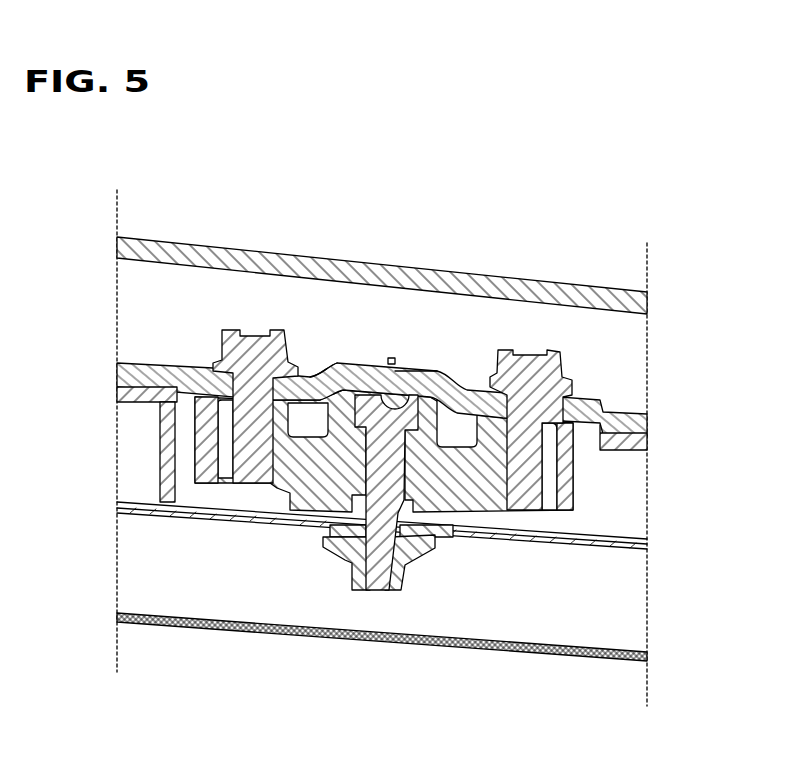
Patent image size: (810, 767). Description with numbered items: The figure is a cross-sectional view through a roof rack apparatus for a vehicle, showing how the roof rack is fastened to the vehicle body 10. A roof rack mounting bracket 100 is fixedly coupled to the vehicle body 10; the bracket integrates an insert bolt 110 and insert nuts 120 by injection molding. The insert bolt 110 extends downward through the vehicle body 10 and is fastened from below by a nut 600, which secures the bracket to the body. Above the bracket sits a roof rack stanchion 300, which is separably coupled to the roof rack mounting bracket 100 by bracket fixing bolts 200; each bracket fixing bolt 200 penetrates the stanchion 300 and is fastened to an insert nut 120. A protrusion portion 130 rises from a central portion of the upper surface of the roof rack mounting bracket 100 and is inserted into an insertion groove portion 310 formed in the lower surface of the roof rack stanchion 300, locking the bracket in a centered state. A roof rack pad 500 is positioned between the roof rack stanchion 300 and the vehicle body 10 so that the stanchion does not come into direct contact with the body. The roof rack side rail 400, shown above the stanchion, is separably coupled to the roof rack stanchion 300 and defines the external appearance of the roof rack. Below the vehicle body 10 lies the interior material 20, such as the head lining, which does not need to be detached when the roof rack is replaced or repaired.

The vehicle body 10 is at (602, 542).
The interior material 20 is at (590, 647).
The roof rack mounting bracket 100 is at (302, 472).
The insert bolt 110 is at (370, 565).
The insert nut 120 is at (224, 447).
The protrusion portion 130 is at (347, 397).
The bracket fixing bolt 200 is at (254, 332).
The roof rack stanchion 300 is at (603, 407).
The insertion groove portion 310 is at (413, 395).
The roof rack side rail 400 is at (480, 287).
The roof rack pad 500 is at (160, 448).
The nut 600 is at (353, 572).